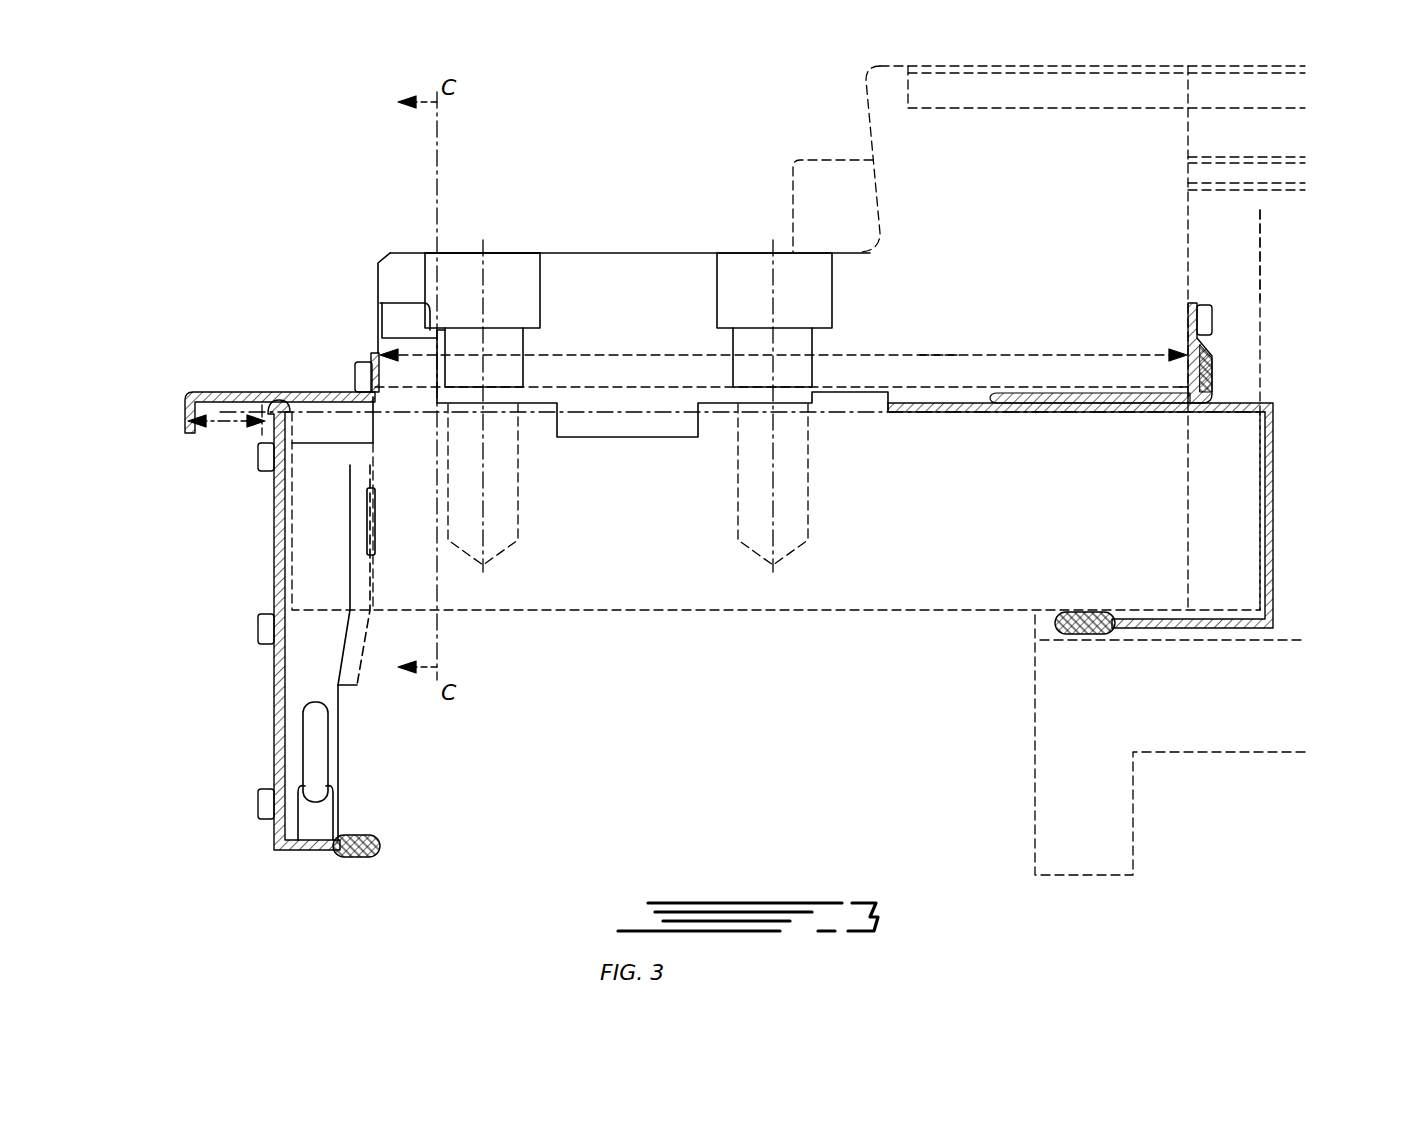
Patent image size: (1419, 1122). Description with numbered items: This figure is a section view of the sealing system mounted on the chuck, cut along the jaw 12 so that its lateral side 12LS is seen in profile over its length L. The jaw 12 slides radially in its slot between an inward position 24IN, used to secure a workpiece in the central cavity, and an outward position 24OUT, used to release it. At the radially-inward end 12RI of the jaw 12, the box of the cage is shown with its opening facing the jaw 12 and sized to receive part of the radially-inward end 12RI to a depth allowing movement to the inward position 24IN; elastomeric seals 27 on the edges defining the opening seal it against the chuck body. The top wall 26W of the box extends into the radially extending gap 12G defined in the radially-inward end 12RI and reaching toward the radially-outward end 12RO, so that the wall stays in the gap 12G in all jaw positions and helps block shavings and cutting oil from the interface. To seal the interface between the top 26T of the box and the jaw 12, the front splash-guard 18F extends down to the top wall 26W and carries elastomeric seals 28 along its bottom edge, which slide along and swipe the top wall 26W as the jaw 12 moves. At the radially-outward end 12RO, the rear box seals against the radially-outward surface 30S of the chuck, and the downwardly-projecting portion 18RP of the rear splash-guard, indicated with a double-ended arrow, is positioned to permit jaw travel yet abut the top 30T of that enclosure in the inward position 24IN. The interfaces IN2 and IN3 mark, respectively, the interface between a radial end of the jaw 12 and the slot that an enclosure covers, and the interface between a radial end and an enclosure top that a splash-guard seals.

The jaw 12 is at (1062, 226).
The lateral side 12LS is at (668, 518).
The radially-outward end 12RO is at (366, 452).
The radially-inward end 12RI is at (1208, 518).
The radially extending gap 12G is at (948, 414).
The downwardly-projecting portion 18RP is at (185, 420).
The front splash-guard 18F is at (1200, 352).
The outward position 24OUT is at (578, 243).
The inward position 24IN is at (1270, 270).
The top wall 26W is at (1034, 414).
The top 26T is at (1254, 400).
The elastomeric seal 27 is at (1062, 636).
The elastomeric seal 28 is at (1212, 388).
The top 30T is at (288, 380).
The radially-outward surface 30S is at (346, 822).
The interface IN2 is at (1172, 378).
The interface IN3 is at (334, 380).
The length L is at (930, 345).